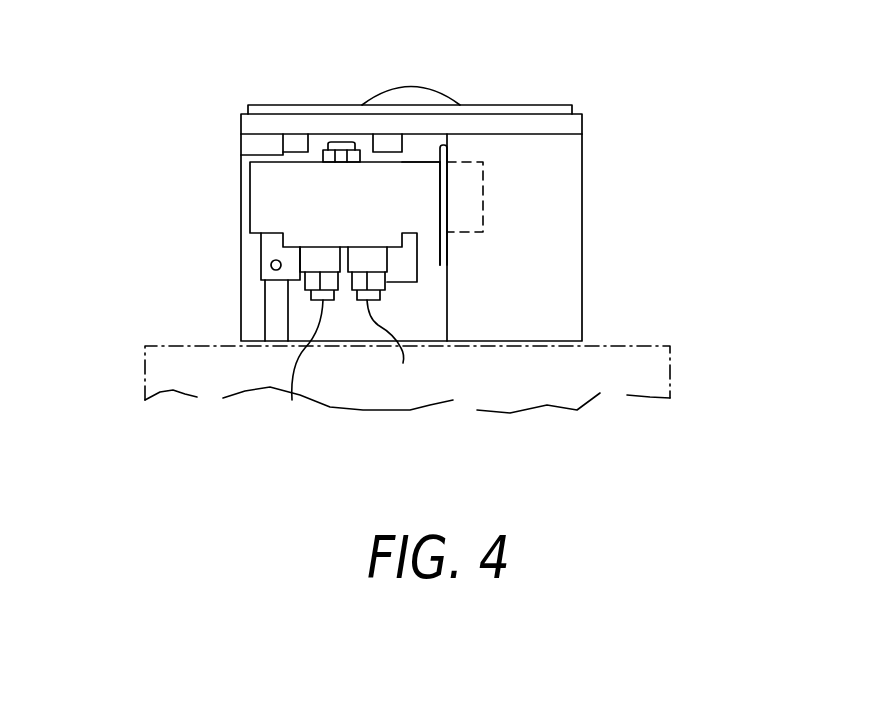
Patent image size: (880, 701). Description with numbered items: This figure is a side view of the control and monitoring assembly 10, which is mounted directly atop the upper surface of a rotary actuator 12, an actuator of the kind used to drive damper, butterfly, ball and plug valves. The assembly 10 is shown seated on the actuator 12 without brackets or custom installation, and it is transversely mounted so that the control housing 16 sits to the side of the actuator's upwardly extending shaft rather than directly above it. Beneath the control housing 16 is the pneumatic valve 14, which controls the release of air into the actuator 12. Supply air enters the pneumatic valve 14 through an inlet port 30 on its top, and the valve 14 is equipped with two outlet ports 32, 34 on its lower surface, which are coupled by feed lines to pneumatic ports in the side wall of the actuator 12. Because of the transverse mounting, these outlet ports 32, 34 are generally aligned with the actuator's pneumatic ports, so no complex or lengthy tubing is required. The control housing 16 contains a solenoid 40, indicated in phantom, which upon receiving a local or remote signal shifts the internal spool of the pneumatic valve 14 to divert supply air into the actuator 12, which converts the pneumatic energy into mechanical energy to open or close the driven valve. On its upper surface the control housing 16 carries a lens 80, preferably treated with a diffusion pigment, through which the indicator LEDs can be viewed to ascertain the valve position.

The control and monitoring assembly 10 is at (684, 82).
The rotary actuator 12 is at (147, 377).
The pneumatic valve 14 is at (257, 197).
The control housing 16 is at (563, 169).
The inlet port 30 is at (342, 143).
The outlet port 32 is at (295, 375).
The outlet port 34 is at (393, 353).
The solenoid 40 is at (483, 212).
The lens 80 is at (433, 92).